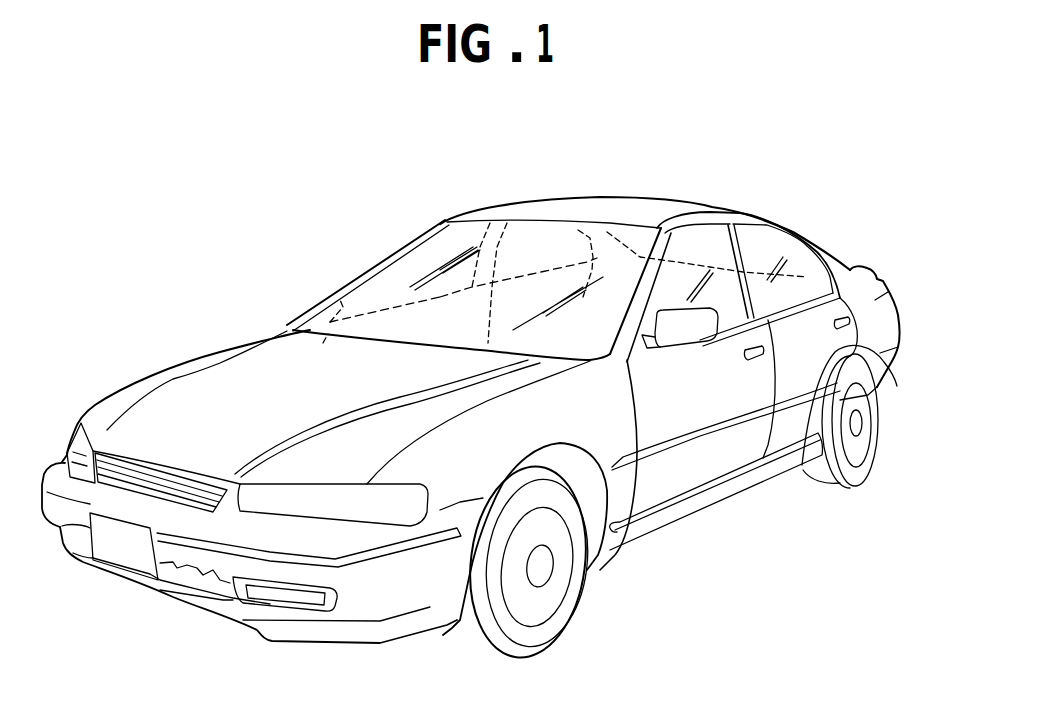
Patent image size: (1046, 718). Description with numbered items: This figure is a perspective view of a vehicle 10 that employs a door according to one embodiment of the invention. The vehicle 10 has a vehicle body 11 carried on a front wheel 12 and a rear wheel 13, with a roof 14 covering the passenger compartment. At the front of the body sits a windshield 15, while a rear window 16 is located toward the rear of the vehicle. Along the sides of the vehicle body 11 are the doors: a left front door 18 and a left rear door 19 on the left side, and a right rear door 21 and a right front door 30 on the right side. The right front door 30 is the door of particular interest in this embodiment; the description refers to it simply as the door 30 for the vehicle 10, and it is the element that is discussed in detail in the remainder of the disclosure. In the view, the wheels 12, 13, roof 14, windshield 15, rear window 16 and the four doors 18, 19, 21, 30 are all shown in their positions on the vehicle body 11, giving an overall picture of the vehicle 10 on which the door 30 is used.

The vehicle 10 is at (243, 245).
The vehicle body 11 is at (303, 317).
The front wheel 12 is at (573, 600).
The rear wheel 13 is at (853, 477).
The roof 14 is at (625, 208).
The windshield 15 is at (630, 340).
The rear window 16 is at (697, 260).
The left front door 18 is at (667, 477).
The left rear door 19 is at (828, 352).
The right rear door 21 is at (548, 268).
The right front door 30 is at (413, 300).